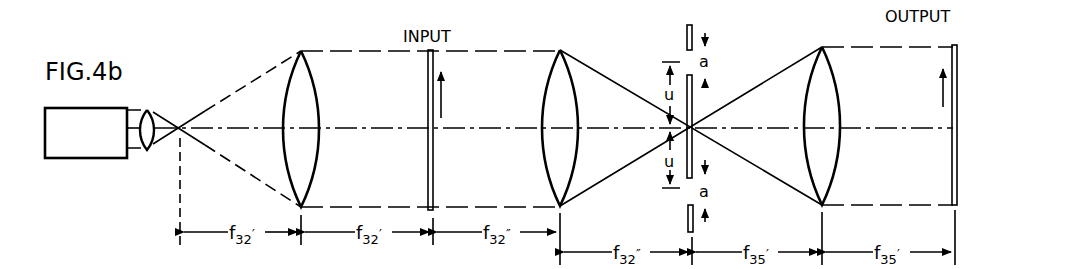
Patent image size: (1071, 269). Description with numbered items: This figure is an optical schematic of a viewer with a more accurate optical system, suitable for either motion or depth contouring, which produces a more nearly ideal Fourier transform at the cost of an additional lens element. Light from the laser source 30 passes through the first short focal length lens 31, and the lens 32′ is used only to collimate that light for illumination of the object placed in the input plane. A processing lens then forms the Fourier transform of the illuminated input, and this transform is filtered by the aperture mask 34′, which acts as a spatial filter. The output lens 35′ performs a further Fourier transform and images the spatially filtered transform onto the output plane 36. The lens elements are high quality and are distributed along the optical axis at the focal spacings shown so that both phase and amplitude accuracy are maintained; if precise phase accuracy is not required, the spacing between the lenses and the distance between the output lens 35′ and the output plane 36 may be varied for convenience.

The laser source 30 is at (83, 160).
The first short focal length lens 31 is at (150, 151).
The collimating lens 32′ is at (301, 51).
The aperture mask 34′ is at (692, 35).
The output lens 35′ is at (822, 47).
The output plane 36 is at (955, 45).